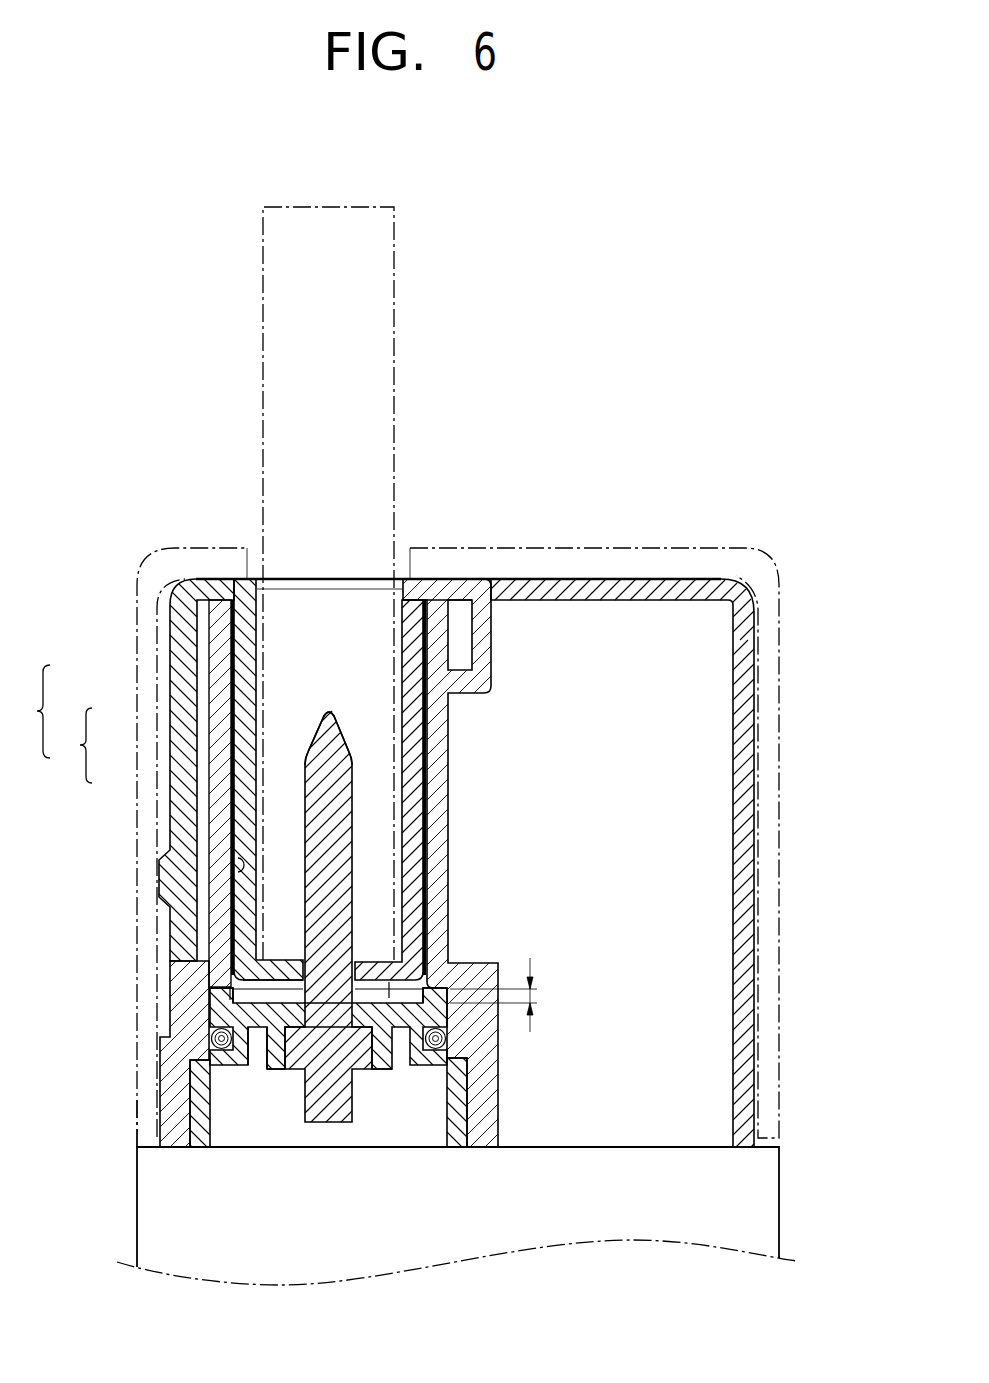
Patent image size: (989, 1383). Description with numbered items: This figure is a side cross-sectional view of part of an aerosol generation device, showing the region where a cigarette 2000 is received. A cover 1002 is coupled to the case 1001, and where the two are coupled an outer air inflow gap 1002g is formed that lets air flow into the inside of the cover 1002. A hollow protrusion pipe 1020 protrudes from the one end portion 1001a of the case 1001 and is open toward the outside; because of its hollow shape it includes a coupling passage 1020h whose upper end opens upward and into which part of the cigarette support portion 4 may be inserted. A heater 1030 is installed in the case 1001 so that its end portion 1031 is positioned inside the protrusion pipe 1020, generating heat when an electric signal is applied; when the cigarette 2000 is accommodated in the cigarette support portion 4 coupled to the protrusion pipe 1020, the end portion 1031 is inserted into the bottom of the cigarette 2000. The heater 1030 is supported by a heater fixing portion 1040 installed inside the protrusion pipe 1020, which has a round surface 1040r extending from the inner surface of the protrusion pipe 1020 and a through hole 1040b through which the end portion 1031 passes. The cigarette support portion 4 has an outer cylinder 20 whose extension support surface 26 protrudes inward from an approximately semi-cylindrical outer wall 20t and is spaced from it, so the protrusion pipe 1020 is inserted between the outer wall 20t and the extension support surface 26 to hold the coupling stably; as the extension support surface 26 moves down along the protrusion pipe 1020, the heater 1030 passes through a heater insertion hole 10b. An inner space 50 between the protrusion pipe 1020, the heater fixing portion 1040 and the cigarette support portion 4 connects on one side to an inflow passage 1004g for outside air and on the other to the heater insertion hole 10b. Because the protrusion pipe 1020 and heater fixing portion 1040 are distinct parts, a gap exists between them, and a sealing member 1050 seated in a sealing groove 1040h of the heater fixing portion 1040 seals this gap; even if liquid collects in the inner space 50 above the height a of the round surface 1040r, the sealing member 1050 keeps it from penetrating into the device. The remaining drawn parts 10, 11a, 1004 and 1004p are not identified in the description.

The cigarette support portion 4 is at (222, 712).
The magnet 10 is at (413, 682).
The heater insertion hole 10b is at (303, 975).
The magnet wall 11a is at (424, 773).
The outer cylinder 20 is at (177, 712).
The outer wall 20t is at (183, 768).
The extension support surface 26 is at (247, 720).
The inner space 50 is at (392, 990).
The height a is at (503, 995).
The case 1001 is at (767, 1200).
The one end portion 1001a is at (754, 836).
The cover 1002 is at (180, 551).
The outer air inflow gap 1002g is at (137, 1141).
The bracket 1004 is at (294, 818).
The bracket plate 1004p is at (399, 580).
The inflow passage 1004g is at (176, 962).
The protrusion pipe 1020 is at (223, 822).
The coupling passage 1020h is at (240, 874).
The heater 1030 is at (316, 915).
The end portion 1031 is at (340, 804).
The heater fixing portion 1040 is at (210, 1012).
The round surface 1040r is at (228, 996).
The sealing groove 1040h is at (246, 1064).
The through hole 1040b is at (320, 1020).
The sealing member 1050 is at (212, 1040).
The cigarette 2000 is at (263, 325).